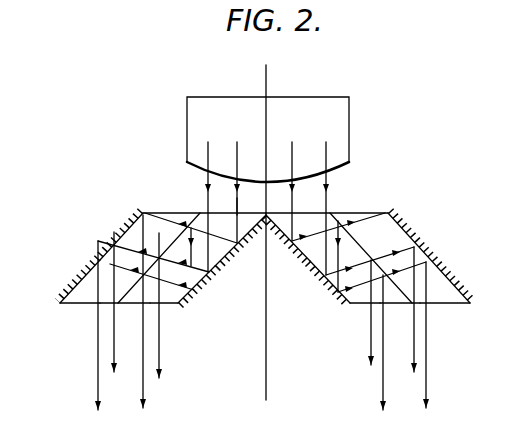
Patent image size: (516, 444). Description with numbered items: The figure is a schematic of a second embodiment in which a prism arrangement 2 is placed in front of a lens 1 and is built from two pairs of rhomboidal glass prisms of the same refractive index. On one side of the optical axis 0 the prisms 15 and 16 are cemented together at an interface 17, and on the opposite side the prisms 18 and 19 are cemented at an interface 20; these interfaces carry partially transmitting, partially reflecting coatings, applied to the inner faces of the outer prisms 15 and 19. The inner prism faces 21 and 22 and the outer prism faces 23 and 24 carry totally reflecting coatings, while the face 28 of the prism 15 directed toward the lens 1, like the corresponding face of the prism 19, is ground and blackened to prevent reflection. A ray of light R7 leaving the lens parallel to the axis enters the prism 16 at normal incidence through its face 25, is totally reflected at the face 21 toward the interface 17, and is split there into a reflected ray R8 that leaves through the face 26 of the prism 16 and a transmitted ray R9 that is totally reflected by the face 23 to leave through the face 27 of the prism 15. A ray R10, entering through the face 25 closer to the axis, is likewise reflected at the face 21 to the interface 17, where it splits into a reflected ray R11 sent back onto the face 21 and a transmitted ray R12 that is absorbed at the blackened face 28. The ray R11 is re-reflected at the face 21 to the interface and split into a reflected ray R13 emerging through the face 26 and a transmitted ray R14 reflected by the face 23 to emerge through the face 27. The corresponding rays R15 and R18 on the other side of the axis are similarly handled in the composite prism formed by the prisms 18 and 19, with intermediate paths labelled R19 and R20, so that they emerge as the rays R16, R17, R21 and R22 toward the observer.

The optical axis 0 is at (260, 247).
The lens 1 is at (349, 122).
The prism arrangement 2 is at (409, 207).
The prism 15 is at (78, 290).
The prism 16 is at (188, 297).
The interface 17 is at (124, 304).
The prism 18 is at (337, 300).
The prism 19 is at (445, 305).
The interface 20 is at (393, 305).
The inner prism face 21 is at (213, 273).
The inner prism face 22 is at (306, 278).
The outer prism face 23 is at (133, 222).
The outer prism face 24 is at (400, 233).
The face 25 is at (239, 210).
The face 26 is at (168, 304).
The face 27 is at (70, 304).
The face 28 is at (160, 212).
The ray of light R7 is at (154, 207).
The reflected ray R8 is at (170, 313).
The transmitted ray R9 is at (138, 250).
The ray R10 is at (250, 180).
The reflected ray R11 is at (230, 247).
The transmitted ray R12 is at (159, 258).
The reflected ray R13 is at (156, 322).
The transmitted ray R14 is at (100, 268).
The ray R15 is at (368, 208).
The ray R16 is at (352, 321).
The ray R17 is at (413, 256).
The ray R18 is at (306, 182).
The light ray R19 is at (349, 256).
The light ray R20 is at (371, 258).
The ray R21 is at (383, 354).
The ray R22 is at (427, 278).